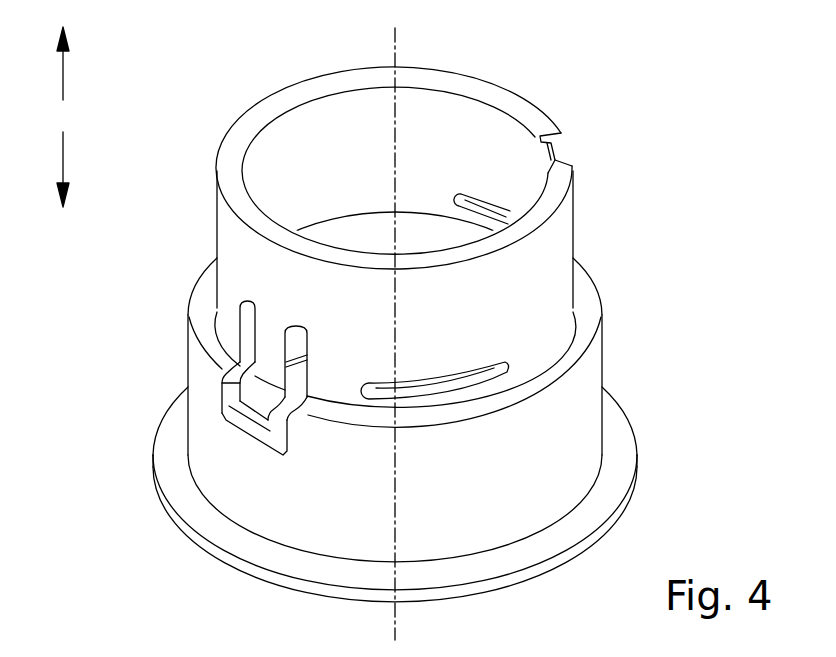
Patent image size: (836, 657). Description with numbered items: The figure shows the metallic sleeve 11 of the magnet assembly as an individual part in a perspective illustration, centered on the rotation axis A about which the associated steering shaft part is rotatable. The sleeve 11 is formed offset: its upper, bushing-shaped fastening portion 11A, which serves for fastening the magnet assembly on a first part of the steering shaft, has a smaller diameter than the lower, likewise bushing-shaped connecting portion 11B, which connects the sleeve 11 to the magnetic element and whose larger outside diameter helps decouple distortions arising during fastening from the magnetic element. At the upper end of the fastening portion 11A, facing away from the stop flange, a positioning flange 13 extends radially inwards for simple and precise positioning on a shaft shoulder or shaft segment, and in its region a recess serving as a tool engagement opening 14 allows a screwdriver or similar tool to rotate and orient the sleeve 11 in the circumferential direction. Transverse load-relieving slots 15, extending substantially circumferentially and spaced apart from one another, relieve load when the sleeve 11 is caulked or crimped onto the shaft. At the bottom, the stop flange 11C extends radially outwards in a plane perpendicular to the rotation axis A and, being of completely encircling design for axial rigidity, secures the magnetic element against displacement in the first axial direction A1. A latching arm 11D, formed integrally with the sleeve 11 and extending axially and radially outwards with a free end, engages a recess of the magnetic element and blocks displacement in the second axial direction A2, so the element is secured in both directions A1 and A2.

The sleeve 11 is at (153, 97).
The fastening portion 11A is at (619, 200).
The connecting portion 11B is at (637, 370).
The stop flange 11C is at (607, 483).
The latching arm 11D is at (268, 340).
The positioning flange 13 is at (538, 81).
The tool engagement opening 14 is at (602, 149).
The load-relieving slot 15 is at (470, 197).
The rotation axis A is at (395, 628).
The first axial direction A1 is at (48, 169).
The second axial direction A2 is at (48, 63).